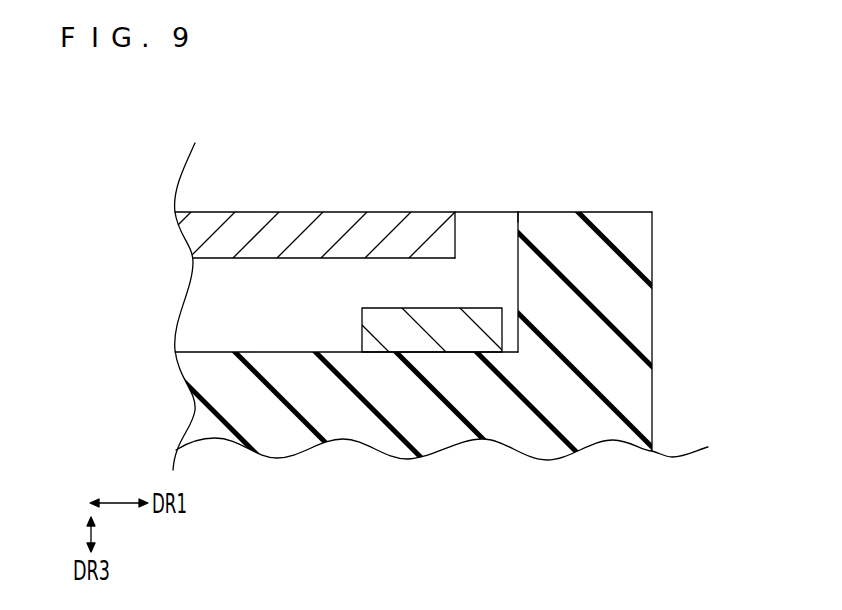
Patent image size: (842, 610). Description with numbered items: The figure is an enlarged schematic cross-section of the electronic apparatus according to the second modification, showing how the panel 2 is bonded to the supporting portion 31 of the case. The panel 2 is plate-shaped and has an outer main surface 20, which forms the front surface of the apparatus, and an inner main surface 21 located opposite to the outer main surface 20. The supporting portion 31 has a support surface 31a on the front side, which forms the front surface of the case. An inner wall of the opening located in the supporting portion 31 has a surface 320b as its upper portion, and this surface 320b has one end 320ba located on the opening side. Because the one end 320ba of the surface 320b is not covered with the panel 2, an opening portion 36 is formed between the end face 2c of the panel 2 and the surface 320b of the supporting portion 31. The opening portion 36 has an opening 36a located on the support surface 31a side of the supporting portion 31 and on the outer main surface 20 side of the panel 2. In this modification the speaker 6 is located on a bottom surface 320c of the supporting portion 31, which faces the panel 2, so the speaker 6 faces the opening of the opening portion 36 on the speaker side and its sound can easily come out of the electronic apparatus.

The panel 2 is at (213, 222).
The outer main surface 20 is at (262, 212).
The inner main surface 21 is at (262, 258).
The end face 2c is at (456, 240).
The speaker 6 is at (362, 325).
The supporting portion 31 is at (637, 325).
The support surface 31a is at (607, 212).
The surface 320b is at (530, 278).
The one end 320ba is at (518, 212).
The bottom surface 320c is at (265, 352).
The opening portion 36 is at (513, 244).
The opening 36a is at (507, 241).